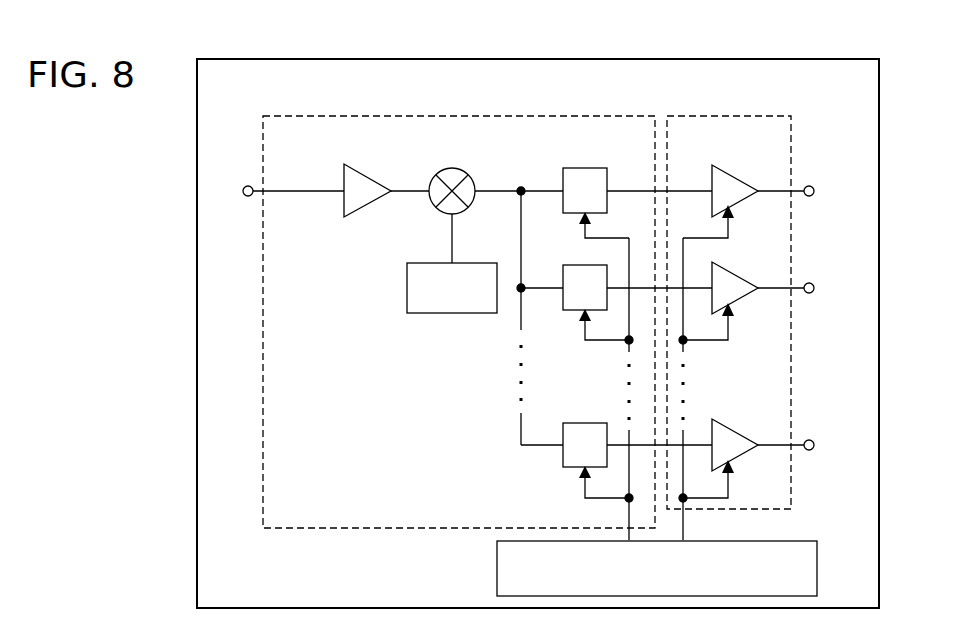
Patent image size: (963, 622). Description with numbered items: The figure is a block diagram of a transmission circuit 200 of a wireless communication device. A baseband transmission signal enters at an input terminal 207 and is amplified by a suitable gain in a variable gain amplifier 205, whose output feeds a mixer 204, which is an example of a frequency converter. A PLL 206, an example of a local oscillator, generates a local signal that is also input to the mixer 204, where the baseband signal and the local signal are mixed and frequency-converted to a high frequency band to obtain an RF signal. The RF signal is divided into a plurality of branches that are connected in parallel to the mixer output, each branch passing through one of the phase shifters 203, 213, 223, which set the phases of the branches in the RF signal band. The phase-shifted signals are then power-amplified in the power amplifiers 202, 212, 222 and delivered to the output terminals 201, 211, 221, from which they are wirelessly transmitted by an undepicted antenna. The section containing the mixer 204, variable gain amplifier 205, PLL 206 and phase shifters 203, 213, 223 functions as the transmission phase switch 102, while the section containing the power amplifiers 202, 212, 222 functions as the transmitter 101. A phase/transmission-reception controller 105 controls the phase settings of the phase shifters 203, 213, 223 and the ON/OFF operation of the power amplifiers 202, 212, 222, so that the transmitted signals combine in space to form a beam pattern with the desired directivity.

The transmission circuit 200 is at (817, 59).
The transmitter 101 is at (728, 114).
The transmission phase switch 102 is at (585, 114).
The phase/transmission-reception controller 105 is at (770, 541).
The output terminal 201 is at (814, 187).
The output terminal 211 is at (814, 284).
The output terminal 221 is at (814, 441).
The power amplifier 202 is at (729, 174).
The power amplifier 212 is at (735, 275).
The power amplifier 222 is at (728, 428).
The phase shifter 203 is at (588, 167).
The phase shifter 213 is at (570, 265).
The phase shifter 223 is at (570, 423).
The mixer 204 is at (461, 170).
The variable gain amplifier 205 is at (377, 152).
The PLL 206 is at (420, 262).
The input terminal 207 is at (246, 187).